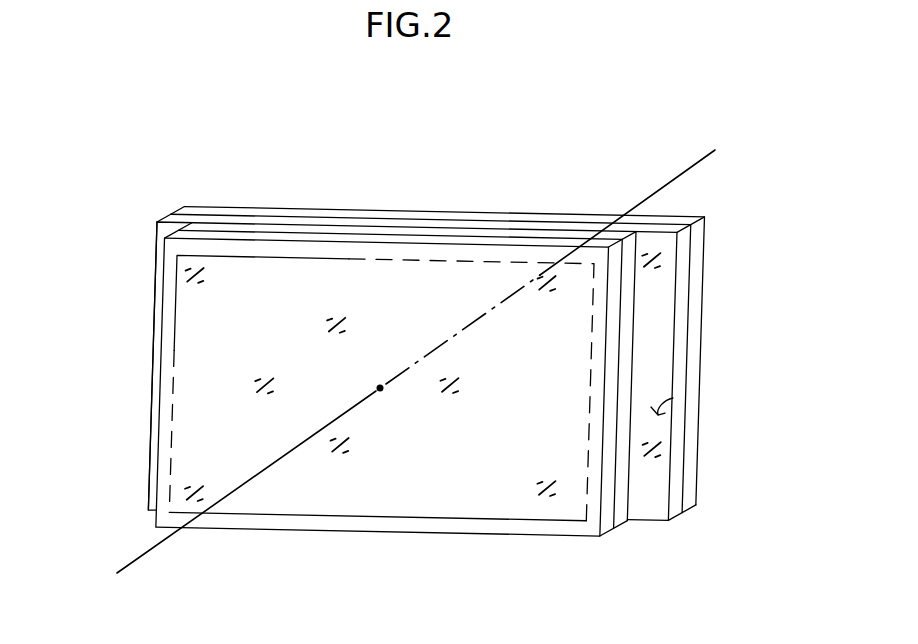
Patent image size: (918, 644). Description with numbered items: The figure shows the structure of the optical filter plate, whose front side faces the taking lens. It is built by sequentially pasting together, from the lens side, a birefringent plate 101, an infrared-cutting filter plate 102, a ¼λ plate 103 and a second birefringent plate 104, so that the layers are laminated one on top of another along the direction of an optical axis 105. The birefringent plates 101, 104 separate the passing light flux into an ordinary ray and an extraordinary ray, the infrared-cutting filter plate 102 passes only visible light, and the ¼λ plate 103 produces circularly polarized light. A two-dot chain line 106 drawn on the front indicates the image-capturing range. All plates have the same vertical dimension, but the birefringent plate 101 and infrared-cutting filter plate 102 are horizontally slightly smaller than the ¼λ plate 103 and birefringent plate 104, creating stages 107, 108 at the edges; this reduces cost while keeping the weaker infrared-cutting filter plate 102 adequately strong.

The birefringent plate 101 is at (613, 487).
The infrared-cutting filter plate 102 is at (632, 350).
The ¼λ plate 103 is at (683, 291).
The birefringent plate 104 is at (706, 237).
The optical axis 105 is at (153, 548).
The two-dot chain line 106 is at (305, 257).
The stage 107 is at (673, 398).
The stage 108 is at (137, 389).